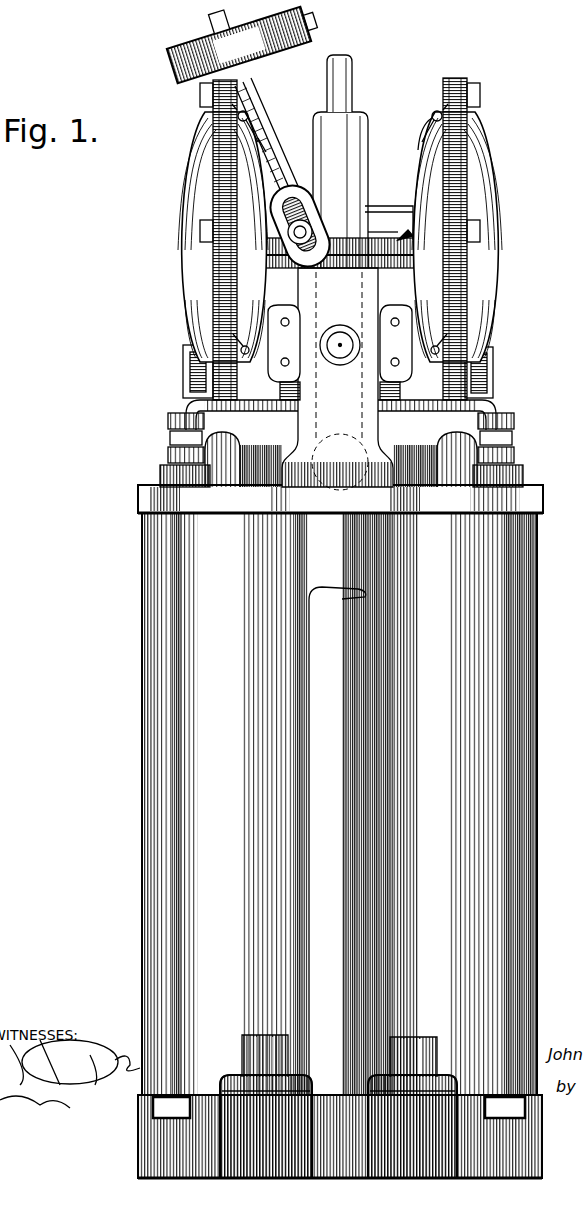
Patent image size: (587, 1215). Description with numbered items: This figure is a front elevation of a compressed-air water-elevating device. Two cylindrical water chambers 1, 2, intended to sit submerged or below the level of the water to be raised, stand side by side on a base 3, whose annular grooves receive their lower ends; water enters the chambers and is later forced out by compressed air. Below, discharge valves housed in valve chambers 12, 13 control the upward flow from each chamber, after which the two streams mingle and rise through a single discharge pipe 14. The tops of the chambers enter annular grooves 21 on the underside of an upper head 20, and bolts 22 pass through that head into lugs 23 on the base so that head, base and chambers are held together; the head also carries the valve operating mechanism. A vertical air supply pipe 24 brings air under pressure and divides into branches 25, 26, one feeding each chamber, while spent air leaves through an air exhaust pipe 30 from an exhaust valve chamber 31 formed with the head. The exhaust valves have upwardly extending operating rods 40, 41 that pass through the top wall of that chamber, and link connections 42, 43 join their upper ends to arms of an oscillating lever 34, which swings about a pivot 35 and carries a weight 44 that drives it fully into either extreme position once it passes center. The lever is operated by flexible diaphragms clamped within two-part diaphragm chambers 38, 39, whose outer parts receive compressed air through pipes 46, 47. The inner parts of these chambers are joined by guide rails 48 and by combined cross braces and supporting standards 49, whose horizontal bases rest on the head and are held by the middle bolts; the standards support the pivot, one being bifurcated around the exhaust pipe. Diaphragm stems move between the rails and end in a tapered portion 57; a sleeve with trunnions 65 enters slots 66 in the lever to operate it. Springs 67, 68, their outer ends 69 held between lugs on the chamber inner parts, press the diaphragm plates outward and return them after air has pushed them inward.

The water chamber 1 is at (217, 804).
The water chamber 2 is at (340, 1140).
The base 3 is at (190, 1150).
The valve chamber 12 is at (250, 1125).
The valve chamber 13 is at (435, 1120).
The discharge pipe 14 is at (337, 841).
The upper head 20 is at (235, 497).
The annular grooves 21 is at (465, 804).
The bolts 22 is at (172, 578).
The lugs 23 is at (175, 1108).
The air supply pipe 24 is at (346, 80).
The branch pipe 25 is at (222, 420).
The branch pipe 26 is at (475, 415).
The air exhaust pipe 30 is at (356, 118).
The exhaust valve chamber 31 is at (478, 458).
The oscillating lever 34 is at (262, 146).
The pivot 35 is at (342, 343).
The diaphragm chamber 38 is at (228, 178).
The diaphragm chamber 39 is at (458, 180).
The operating rod 40 is at (242, 405).
The operating rod 41 is at (484, 396).
The link connection 42 is at (290, 345).
The link connection 43 is at (496, 312).
The weight 44 is at (204, 63).
The pipe 46 is at (196, 366).
The pipe 47 is at (485, 370).
The guide rails 48 is at (408, 236).
The combined cross braces and supporting standards 49 is at (235, 445).
The tapered portion 57 is at (412, 216).
The trunnions 65 is at (312, 224).
The slots 66 is at (300, 200).
The spring 67 is at (268, 150).
The spring 68 is at (428, 136).
The outer ends of springs 69 is at (212, 119).